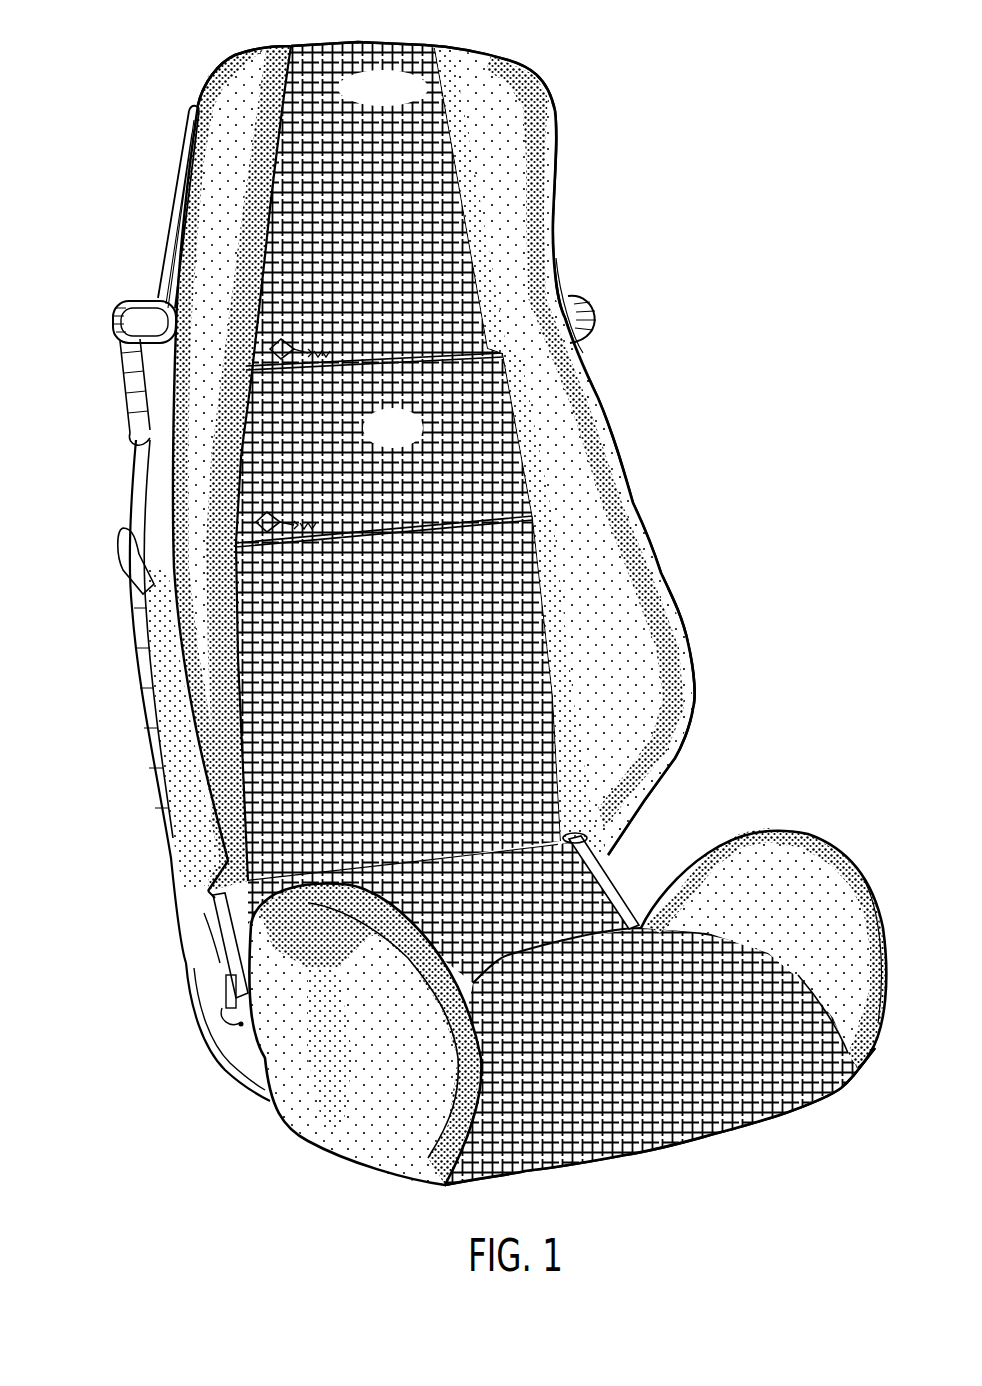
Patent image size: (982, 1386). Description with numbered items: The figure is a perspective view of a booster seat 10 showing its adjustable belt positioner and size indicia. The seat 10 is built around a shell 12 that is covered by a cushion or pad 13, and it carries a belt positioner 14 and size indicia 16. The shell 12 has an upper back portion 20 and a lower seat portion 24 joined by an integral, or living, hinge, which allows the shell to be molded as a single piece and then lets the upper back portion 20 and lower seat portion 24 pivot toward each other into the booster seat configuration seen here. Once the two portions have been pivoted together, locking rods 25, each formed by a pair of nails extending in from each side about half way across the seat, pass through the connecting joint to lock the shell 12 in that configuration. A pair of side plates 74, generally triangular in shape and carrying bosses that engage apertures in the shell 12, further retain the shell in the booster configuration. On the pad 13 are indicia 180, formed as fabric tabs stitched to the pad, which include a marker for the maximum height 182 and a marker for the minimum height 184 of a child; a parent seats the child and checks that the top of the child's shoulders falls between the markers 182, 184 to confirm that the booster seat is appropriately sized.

The seat 10 is at (762, 420).
The shell 12 is at (232, 1066).
The pad 13 is at (688, 707).
The belt positioner 14 is at (128, 276).
The size indicia 16 is at (124, 402).
The upper back portion 20 is at (620, 392).
The lower seat portion 24 is at (872, 874).
The locking rods 25 is at (212, 985).
The side plates 74 is at (210, 953).
The indicia 180 is at (66, 452).
The maximum height marker 182 is at (258, 346).
The minimum height marker 184 is at (246, 512).